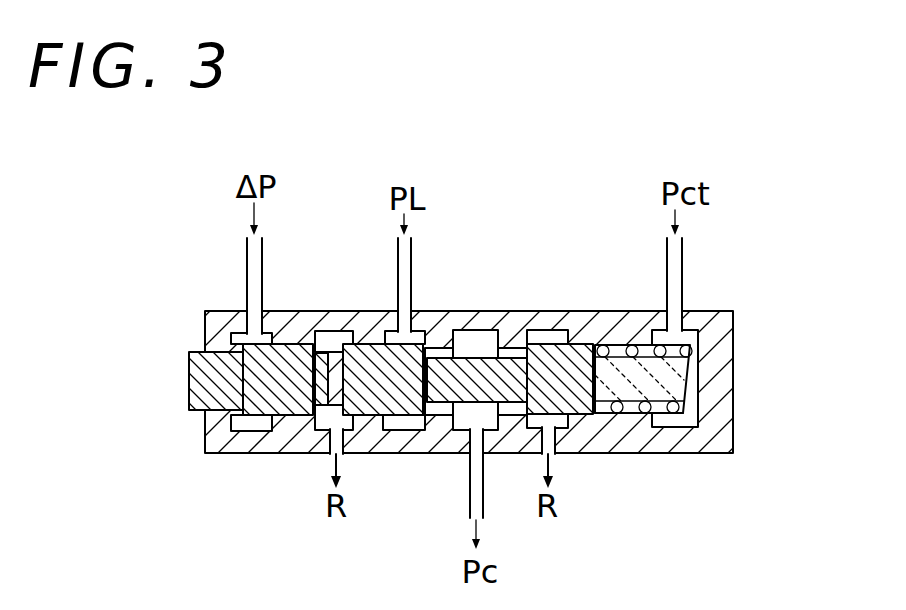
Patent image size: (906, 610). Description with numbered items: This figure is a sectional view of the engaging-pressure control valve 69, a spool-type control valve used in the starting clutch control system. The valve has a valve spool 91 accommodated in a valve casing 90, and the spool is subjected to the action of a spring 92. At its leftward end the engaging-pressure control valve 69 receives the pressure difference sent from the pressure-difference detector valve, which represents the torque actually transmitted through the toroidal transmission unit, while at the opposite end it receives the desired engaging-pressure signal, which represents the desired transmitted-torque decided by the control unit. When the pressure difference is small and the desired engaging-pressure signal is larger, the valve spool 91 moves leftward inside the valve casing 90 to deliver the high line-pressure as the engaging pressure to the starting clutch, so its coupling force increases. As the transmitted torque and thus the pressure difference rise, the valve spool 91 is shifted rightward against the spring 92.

The engaging-pressure control valve 69 is at (502, 302).
The valve casing 90 is at (612, 330).
The valve spool 91 is at (388, 392).
The spring 92 is at (645, 413).